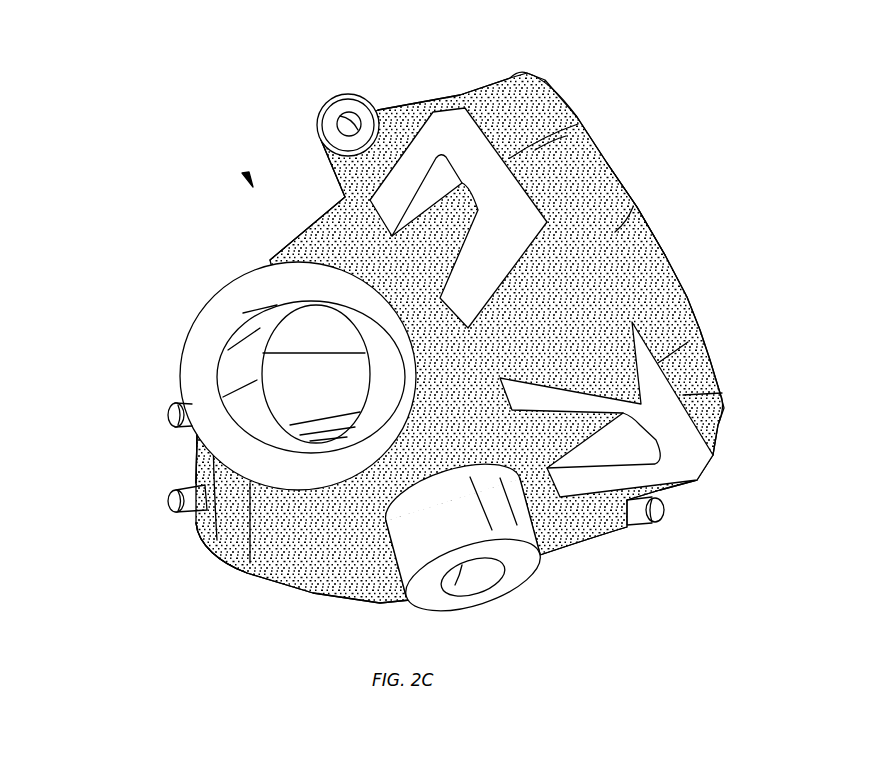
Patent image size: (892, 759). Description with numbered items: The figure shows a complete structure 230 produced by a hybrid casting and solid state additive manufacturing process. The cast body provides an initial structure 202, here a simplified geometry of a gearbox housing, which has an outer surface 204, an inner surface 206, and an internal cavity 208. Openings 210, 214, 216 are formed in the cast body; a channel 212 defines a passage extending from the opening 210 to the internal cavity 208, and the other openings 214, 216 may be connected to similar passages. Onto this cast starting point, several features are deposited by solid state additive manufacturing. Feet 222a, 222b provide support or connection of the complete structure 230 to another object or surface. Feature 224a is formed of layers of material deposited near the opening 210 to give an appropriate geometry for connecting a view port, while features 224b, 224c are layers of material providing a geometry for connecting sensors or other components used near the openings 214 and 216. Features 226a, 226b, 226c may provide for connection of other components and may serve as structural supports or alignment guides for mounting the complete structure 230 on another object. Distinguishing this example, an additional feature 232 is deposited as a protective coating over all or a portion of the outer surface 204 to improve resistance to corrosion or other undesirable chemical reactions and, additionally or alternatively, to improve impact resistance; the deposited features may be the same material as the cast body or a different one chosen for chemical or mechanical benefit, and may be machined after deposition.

The initial structure 202 is at (492, 84).
The outer surface 204 is at (460, 338).
The inner surface 206 is at (316, 374).
The internal cavity 208 is at (273, 363).
The opening 210 is at (290, 367).
The channel 212 is at (247, 368).
The opening 214 is at (343, 110).
The opening 216 is at (473, 573).
The foot feature 222a is at (498, 173).
The foot feature 222b is at (650, 385).
The attachment feature 224a is at (257, 457).
The attachment feature 224b is at (322, 128).
The attachment feature 224c is at (530, 567).
The mounting feature 226a is at (170, 413).
The mounting feature 226b is at (166, 500).
The mounting feature 226c is at (668, 510).
The complete structure 230 is at (240, 174).
The protective coating feature 232 is at (637, 207).